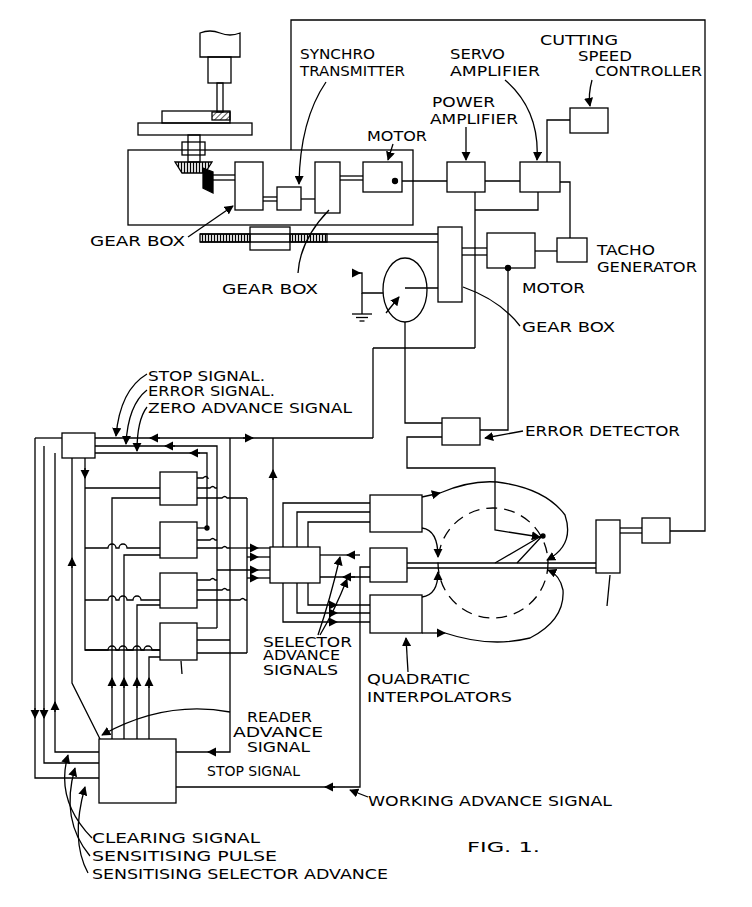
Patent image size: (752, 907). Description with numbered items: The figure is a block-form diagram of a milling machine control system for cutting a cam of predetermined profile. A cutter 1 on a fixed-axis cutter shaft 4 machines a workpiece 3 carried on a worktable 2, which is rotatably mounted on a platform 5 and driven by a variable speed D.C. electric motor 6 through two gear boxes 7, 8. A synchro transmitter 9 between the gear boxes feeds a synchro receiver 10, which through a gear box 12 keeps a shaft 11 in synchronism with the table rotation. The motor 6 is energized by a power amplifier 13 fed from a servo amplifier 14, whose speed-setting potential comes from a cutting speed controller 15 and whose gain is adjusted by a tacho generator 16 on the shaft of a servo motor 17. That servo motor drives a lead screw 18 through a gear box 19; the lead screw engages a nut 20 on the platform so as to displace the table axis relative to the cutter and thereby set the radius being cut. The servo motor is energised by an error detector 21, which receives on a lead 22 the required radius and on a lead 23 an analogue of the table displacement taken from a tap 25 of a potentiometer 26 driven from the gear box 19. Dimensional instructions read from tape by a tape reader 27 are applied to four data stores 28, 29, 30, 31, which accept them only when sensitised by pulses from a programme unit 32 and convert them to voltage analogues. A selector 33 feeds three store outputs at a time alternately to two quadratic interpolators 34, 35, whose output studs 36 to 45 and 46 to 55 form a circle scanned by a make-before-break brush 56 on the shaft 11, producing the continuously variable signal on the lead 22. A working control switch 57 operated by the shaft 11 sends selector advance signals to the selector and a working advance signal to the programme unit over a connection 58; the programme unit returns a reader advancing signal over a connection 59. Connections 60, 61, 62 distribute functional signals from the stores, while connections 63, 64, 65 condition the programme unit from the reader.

The cutter 1 is at (230, 116).
The worktable 2 is at (138, 128).
The workpiece 3 is at (186, 111).
The cutter shaft 4 is at (226, 98).
The platform 5 is at (124, 177).
The electric motor 6 is at (383, 187).
The gear box 7 is at (327, 196).
The gear box 8 is at (240, 193).
The synchro transmitter 9 is at (283, 185).
The synchro receiver 10 is at (661, 518).
The shaft 11 is at (583, 570).
The gear box 12 is at (606, 520).
The power amplifier 13 is at (462, 188).
The servo amplifier 14 is at (560, 171).
The cutting speed controller 15 is at (608, 118).
The tacho generator 16 is at (579, 240).
The servo motor 17 is at (525, 243).
The lead screw 18 is at (357, 239).
The gear box 19 is at (457, 296).
The nut 20 is at (268, 247).
The error detector 21 is at (451, 422).
The lead 22 is at (497, 469).
The lead 23 is at (405, 335).
The tap 25 is at (389, 306).
The potentiometer 26 is at (423, 314).
The tape reader 27 is at (74, 442).
The data store 28 is at (203, 488).
The data store 29 is at (177, 630).
The data store 30 is at (192, 656).
The data store 31 is at (179, 618).
The programme unit 32 is at (144, 793).
The selector 33 is at (297, 544).
The quadratic interpolator 34 is at (396, 503).
The quadratic interpolator 35 is at (390, 628).
The output stud 36 is at (442, 559).
The output stud 45 is at (550, 540).
The output stud 46 is at (538, 597).
The output stud 55 is at (442, 571).
The brush 56 is at (518, 563).
The working control switch 57 is at (388, 565).
The connection 58 is at (362, 775).
The connection 59 is at (73, 680).
The connection 60 is at (212, 461).
The connection 61 is at (220, 468).
The connection 62 is at (231, 480).
The connection 63 is at (41, 688).
The connection 64 is at (47, 731).
The connection 65 is at (57, 739).